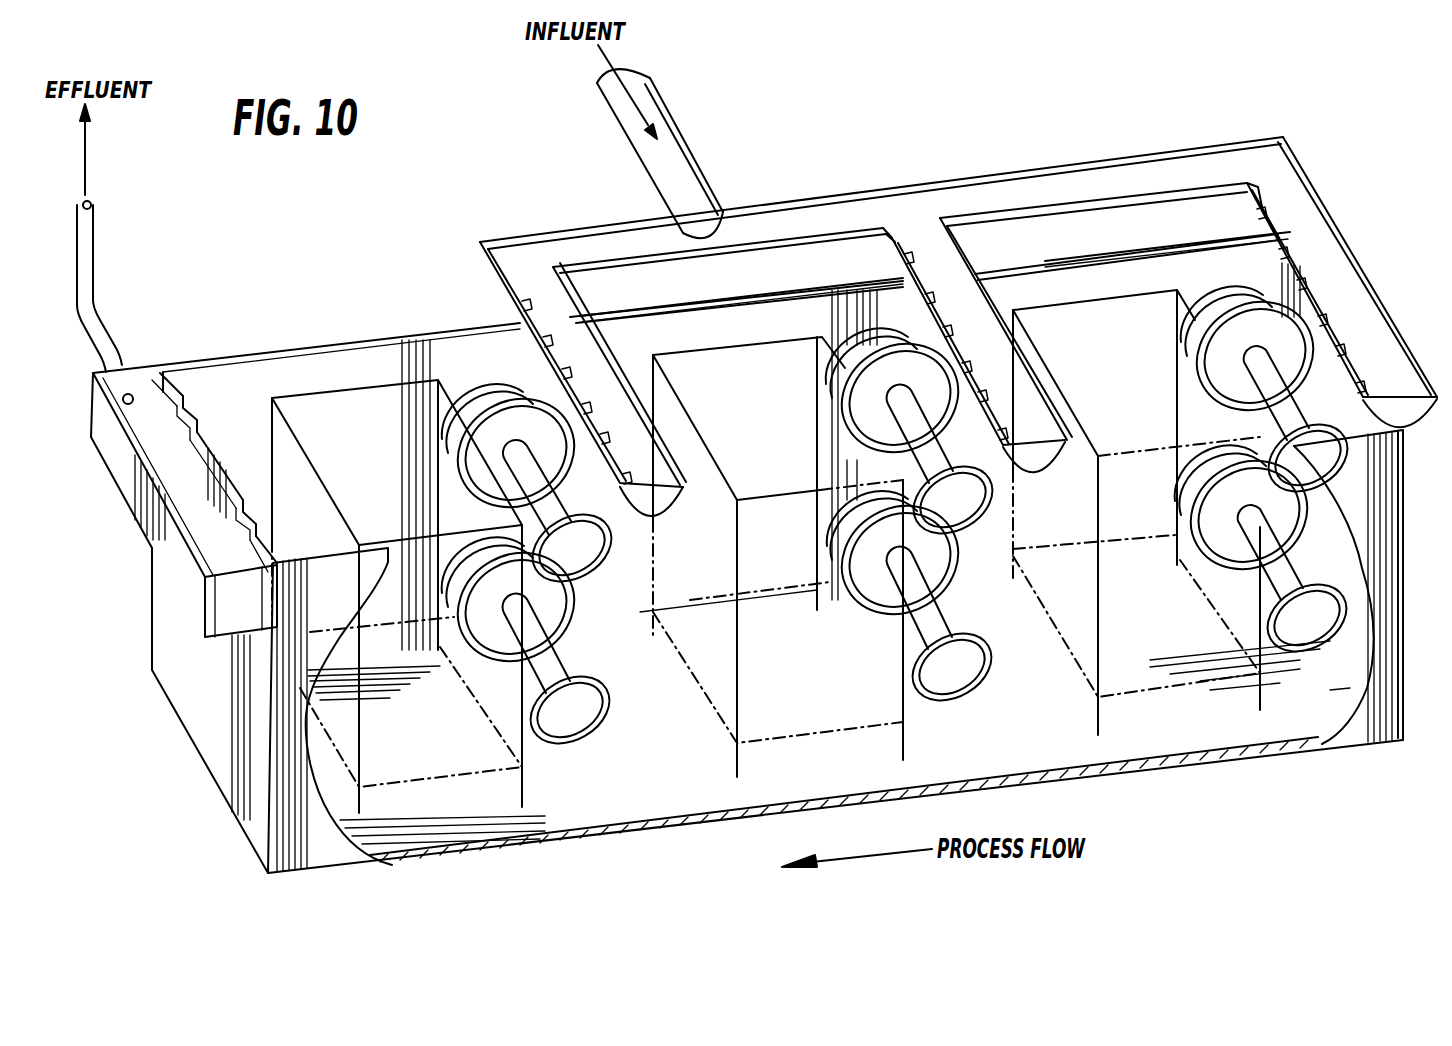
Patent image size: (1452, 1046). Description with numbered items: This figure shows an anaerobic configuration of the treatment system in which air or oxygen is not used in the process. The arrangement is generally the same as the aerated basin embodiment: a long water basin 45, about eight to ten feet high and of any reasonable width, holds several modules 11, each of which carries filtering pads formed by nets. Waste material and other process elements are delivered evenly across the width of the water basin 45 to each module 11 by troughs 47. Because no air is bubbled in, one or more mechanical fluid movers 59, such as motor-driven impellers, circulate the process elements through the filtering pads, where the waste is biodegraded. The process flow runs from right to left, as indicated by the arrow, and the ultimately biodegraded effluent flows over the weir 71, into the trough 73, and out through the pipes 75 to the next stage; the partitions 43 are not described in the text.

The module 11 is at (416, 781).
The partition wall 43 is at (527, 784).
The water basin 45 is at (228, 768).
The trough 47 is at (672, 118).
The mechanical fluid mover 59 is at (553, 628).
The weir 71 is at (186, 414).
The trough 73 is at (148, 540).
The pipe 75 is at (94, 251).